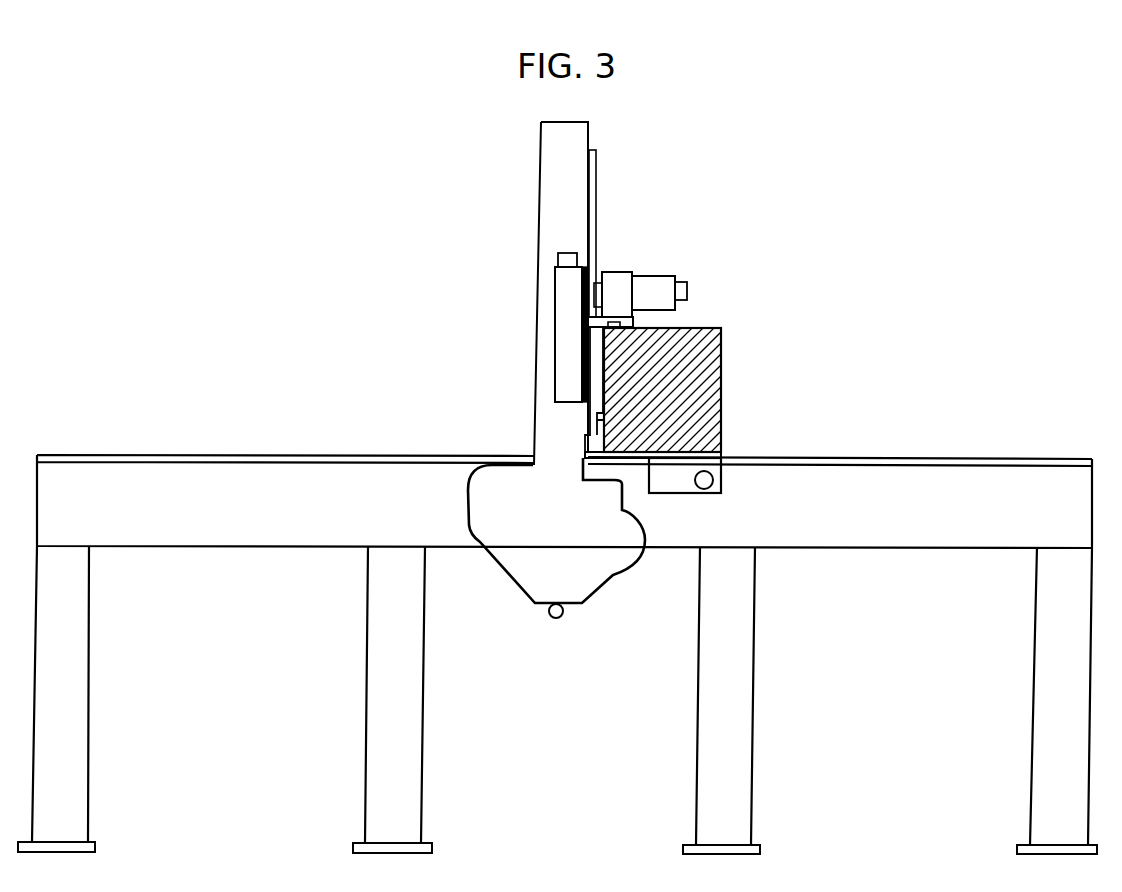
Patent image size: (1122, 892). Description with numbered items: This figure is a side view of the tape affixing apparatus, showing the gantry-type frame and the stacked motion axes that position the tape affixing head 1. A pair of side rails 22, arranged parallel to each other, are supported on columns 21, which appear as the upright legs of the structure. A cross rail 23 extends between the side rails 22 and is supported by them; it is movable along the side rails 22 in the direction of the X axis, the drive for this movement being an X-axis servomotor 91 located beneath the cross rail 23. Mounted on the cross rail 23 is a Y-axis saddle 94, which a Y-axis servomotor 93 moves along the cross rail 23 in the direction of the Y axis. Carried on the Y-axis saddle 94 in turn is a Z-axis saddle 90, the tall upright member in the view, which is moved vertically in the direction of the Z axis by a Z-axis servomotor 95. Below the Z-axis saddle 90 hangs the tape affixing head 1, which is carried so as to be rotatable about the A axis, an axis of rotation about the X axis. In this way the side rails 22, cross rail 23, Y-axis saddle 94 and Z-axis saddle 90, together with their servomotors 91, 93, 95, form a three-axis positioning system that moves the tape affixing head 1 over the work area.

The tape affixing head 1 is at (533, 583).
The columns 21 is at (367, 760).
The side rails 22 is at (927, 505).
The cross rail 23 is at (710, 385).
The Z-axis saddle 90 is at (578, 128).
The X-axis servomotor 91 is at (700, 488).
The Y-axis servomotor 93 is at (555, 272).
The Y-axis saddle 94 is at (593, 378).
The Z-axis servomotor 95 is at (655, 280).